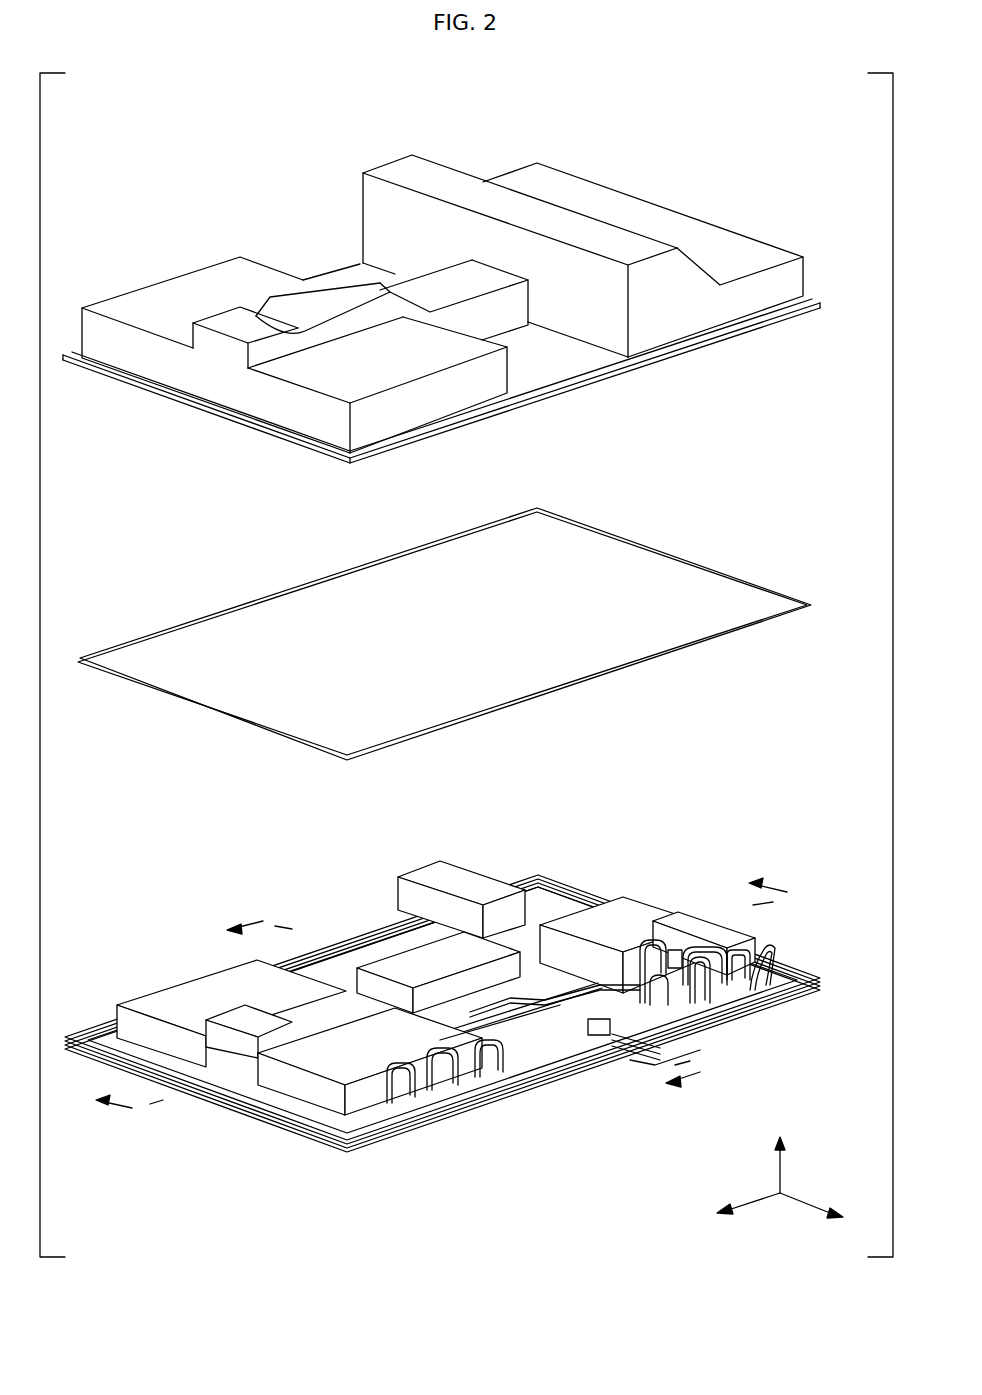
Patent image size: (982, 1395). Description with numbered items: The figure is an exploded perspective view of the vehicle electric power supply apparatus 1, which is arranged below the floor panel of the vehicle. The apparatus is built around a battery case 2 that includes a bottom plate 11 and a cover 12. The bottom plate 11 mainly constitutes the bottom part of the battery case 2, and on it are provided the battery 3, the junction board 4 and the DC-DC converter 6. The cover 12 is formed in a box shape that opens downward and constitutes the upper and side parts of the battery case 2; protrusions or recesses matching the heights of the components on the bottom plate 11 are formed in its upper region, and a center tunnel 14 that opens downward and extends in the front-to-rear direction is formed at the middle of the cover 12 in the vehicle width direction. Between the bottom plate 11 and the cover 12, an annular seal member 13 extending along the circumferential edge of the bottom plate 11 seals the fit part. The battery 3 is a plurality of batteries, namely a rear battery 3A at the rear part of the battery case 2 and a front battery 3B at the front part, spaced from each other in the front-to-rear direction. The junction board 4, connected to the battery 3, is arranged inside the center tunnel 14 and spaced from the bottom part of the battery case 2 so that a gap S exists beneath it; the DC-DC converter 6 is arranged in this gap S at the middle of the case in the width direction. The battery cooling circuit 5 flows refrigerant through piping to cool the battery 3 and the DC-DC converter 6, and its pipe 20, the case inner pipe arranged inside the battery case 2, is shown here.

The vehicle electric power supply apparatus 1 is at (275, 190).
The battery case 2 is at (701, 214).
The battery 3 is at (419, 990).
The rear battery 3A is at (478, 874).
The front battery 3B is at (127, 1002).
The junction board 4 is at (397, 964).
The battery cooling circuit 5 is at (724, 1003).
The DC-DC converter 6 is at (544, 969).
The bottom plate 11 is at (211, 1090).
The cover 12 is at (197, 410).
The annular seal member 13 is at (197, 707).
The center tunnel 14 is at (436, 270).
The pipe 20 is at (565, 1048).
The gap S is at (442, 1016).